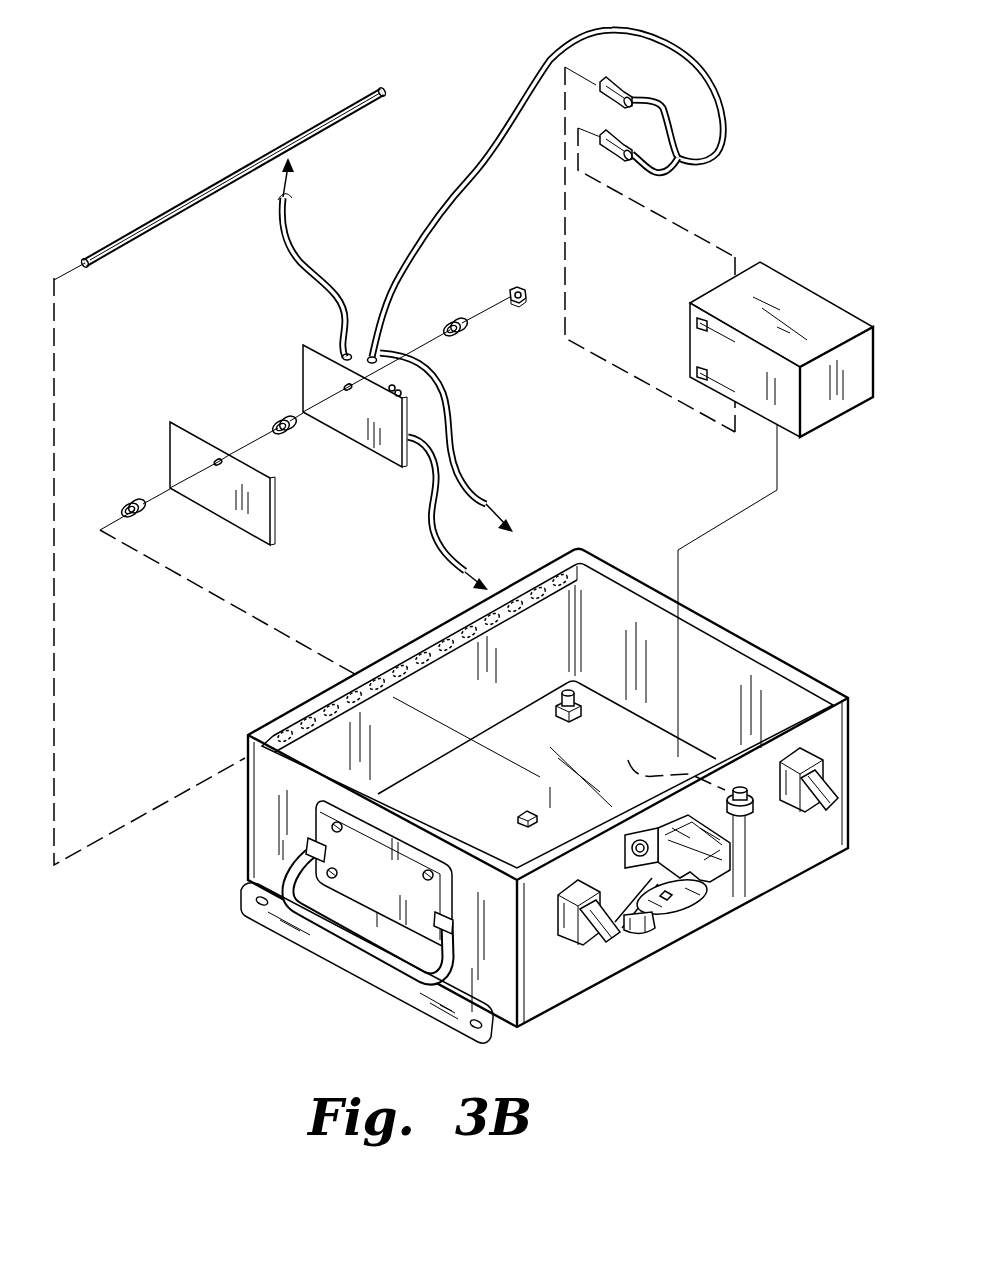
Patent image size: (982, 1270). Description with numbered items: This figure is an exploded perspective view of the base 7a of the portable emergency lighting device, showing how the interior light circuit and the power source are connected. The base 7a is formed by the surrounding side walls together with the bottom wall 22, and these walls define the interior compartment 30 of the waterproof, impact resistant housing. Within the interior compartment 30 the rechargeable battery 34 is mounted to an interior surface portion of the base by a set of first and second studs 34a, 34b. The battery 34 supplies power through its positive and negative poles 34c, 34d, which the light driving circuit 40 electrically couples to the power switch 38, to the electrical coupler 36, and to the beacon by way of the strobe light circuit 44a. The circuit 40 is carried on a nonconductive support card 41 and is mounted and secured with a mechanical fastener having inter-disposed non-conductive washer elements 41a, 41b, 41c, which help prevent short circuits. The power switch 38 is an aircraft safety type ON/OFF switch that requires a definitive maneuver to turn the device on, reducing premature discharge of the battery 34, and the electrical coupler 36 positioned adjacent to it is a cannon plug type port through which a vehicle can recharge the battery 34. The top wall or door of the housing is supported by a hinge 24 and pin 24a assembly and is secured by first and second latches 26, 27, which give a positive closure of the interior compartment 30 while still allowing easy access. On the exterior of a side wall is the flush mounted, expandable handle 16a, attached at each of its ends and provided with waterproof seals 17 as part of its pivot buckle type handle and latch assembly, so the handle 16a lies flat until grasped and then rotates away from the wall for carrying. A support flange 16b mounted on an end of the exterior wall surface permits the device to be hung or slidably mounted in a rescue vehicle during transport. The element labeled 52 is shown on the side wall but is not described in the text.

The base 7a is at (138, 98).
The pin 24a is at (384, 90).
The strobe light circuit 44a is at (284, 197).
The signalling circuit board 40 is at (318, 365).
The nonconductive support card 41 is at (175, 452).
The non-conductive washer element 41a is at (143, 515).
The non-conductive washer element 41b is at (290, 432).
The non-conductive washer element 41c is at (462, 336).
The power switch 38 is at (495, 512).
The electrical coupler 36 is at (465, 573).
The battery 34 is at (788, 297).
The first stud 34a is at (558, 712).
The second stud 34b is at (621, 779).
The positive pole 34c is at (690, 375).
The negative pole 34d is at (690, 315).
The interior compartment 30 is at (705, 682).
The hinge 24 is at (305, 717).
The handle 16a is at (313, 847).
The support flange 16b is at (420, 998).
The waterproof seal 17 is at (466, 905).
The aperture 52 is at (794, 856).
The second latch 27 is at (835, 814).
The first latch 26 is at (580, 943).
The bottom wall 22 is at (589, 1003).